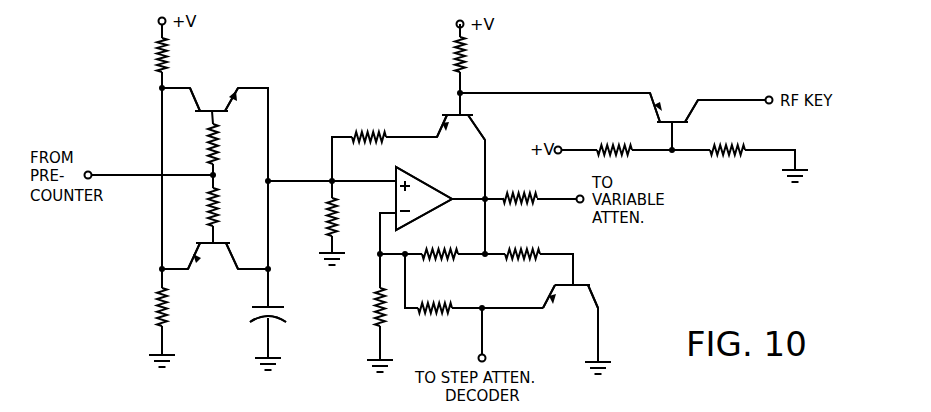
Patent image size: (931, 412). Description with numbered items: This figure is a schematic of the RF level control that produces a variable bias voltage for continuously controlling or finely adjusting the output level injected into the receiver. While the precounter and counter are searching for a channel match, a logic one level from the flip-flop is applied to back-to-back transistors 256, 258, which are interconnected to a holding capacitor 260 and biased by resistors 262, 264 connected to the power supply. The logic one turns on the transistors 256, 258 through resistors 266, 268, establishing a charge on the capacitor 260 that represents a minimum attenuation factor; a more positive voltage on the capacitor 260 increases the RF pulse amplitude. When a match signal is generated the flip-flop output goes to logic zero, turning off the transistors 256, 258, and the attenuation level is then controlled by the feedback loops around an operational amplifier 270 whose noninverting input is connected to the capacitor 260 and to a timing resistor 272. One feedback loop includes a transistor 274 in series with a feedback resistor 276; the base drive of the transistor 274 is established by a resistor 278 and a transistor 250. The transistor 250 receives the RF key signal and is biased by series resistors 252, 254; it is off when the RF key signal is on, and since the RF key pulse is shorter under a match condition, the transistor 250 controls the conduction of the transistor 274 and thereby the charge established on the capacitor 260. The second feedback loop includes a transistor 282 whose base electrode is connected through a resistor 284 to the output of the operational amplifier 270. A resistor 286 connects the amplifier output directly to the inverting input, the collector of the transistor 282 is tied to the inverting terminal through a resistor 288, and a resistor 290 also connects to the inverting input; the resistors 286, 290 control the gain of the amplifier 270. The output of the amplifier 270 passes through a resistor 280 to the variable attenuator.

The transistor 250 is at (660, 106).
The resistor 252 is at (612, 145).
The resistor 254 is at (735, 142).
The transistor 256 is at (197, 97).
The transistor 258 is at (228, 262).
The holding capacitor 260 is at (251, 315).
The resistor 262 is at (158, 47).
The resistor 264 is at (157, 297).
The resistor 266 is at (210, 136).
The resistor 268 is at (208, 206).
The operational amplifier 270 is at (430, 205).
The timing resistor 272 is at (327, 205).
The transistor 274 is at (472, 128).
The feedback resistor 276 is at (381, 134).
The resistor 278 is at (455, 47).
The resistor 280 is at (530, 193).
The transistor 282 is at (549, 301).
The resistor 284 is at (537, 241).
The resistor 286 is at (453, 259).
The resistor 288 is at (447, 314).
The resistor 290 is at (375, 306).